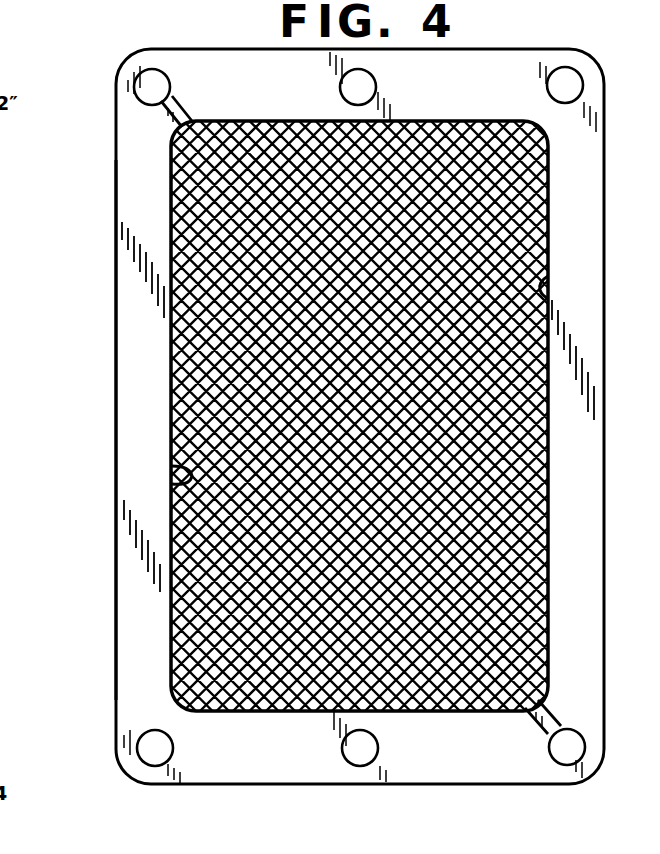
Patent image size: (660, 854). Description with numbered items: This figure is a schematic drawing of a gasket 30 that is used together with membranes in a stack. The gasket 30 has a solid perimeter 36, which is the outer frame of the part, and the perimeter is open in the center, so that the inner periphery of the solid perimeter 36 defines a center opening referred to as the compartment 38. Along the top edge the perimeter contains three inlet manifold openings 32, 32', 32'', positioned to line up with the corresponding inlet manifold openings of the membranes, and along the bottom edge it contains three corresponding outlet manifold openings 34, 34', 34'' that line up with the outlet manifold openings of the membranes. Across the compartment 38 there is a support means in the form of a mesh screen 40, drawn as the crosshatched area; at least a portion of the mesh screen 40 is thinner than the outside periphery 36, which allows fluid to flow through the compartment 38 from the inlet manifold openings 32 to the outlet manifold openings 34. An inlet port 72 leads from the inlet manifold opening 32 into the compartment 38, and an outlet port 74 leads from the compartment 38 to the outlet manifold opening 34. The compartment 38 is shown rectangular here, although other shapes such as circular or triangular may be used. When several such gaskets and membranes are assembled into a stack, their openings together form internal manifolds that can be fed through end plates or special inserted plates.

The gasket 30 is at (98, 333).
The inlet manifold opening 32 is at (157, 58).
The inlet manifold opening 32' is at (386, 84).
The inlet manifold opening 32'' is at (602, 83).
The outlet manifold opening 34 is at (567, 775).
The outlet manifold opening 34' is at (342, 778).
The outlet manifold opening 34'' is at (151, 778).
The solid perimeter 36 is at (140, 201).
The compartment 38 is at (172, 468).
The mesh screen 40 is at (504, 228).
The inlet port 72 is at (176, 108).
The outlet port 74 is at (546, 716).